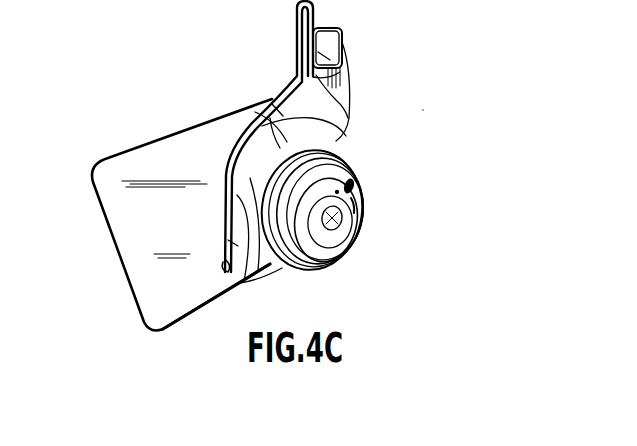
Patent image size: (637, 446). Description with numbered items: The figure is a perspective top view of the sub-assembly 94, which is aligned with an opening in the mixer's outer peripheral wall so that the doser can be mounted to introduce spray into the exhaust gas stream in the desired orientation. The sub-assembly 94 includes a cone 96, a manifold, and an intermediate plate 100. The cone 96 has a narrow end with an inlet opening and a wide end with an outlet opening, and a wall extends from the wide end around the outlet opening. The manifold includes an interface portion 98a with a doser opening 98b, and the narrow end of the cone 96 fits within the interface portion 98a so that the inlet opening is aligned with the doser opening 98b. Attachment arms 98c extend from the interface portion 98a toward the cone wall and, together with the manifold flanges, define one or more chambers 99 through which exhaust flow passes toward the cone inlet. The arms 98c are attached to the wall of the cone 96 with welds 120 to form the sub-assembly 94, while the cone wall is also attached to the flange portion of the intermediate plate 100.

The sub-assembly 94 is at (423, 110).
The cone 96 is at (285, 93).
The interface portion 98a is at (362, 185).
The doser opening 98b is at (330, 227).
The attachment arms 98c is at (232, 176).
The chambers 99 is at (323, 53).
The intermediate plate 100 is at (135, 252).
The welds 120 is at (242, 174).